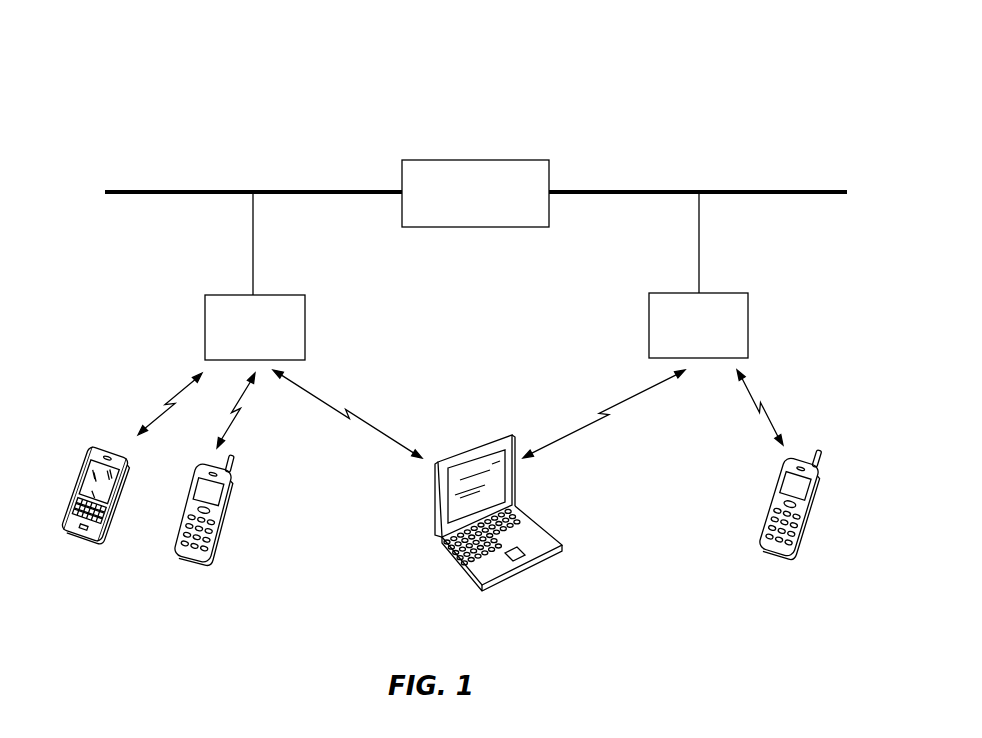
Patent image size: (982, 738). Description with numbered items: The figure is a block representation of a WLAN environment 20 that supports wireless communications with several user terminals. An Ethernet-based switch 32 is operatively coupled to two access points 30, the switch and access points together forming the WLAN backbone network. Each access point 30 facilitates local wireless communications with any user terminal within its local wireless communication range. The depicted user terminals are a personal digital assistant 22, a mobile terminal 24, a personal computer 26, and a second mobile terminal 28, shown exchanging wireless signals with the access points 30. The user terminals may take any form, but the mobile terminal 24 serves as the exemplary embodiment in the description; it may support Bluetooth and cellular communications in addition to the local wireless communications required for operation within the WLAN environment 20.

The WLAN environment 20 is at (648, 75).
The personal digital assistant (PDA) 22 is at (87, 465).
The mobile terminal 24 is at (220, 517).
The personal computer (PC) 26 is at (527, 512).
The mobile terminal 28 is at (807, 520).
The access point 30 is at (277, 295).
The Ethernet-based switch 32 is at (498, 160).